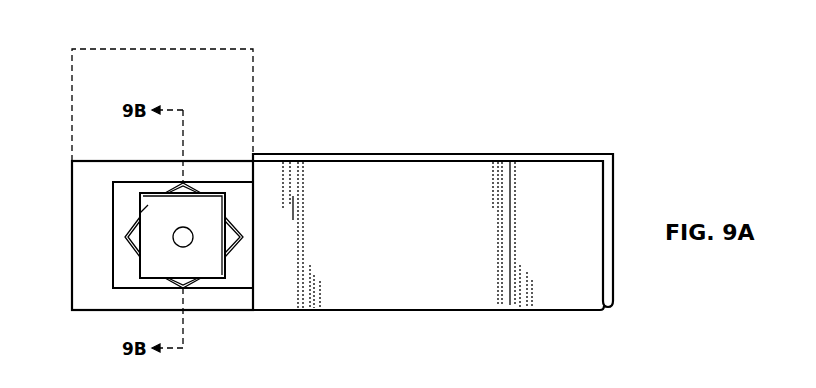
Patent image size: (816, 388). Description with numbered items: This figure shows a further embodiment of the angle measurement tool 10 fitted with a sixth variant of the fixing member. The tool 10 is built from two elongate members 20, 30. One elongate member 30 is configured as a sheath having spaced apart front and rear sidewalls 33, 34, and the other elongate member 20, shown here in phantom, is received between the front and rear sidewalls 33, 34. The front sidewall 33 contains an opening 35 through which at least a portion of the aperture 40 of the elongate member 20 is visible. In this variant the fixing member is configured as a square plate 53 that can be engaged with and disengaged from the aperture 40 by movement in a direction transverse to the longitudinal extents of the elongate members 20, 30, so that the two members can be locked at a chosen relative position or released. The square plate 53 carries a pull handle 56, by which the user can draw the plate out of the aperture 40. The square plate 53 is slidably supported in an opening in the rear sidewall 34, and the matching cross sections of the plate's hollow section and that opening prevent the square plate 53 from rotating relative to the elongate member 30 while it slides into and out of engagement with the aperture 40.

The angle measurement tool 10 is at (88, 24).
The elongate member 20 is at (182, 48).
The elongate member 30 is at (365, 119).
The front sidewall 33 is at (432, 177).
The rear sidewall 34 is at (506, 154).
The opening 35 is at (233, 272).
The aperture 40 is at (118, 232).
The square plate 53 is at (150, 214).
The pull handle 56 is at (178, 242).